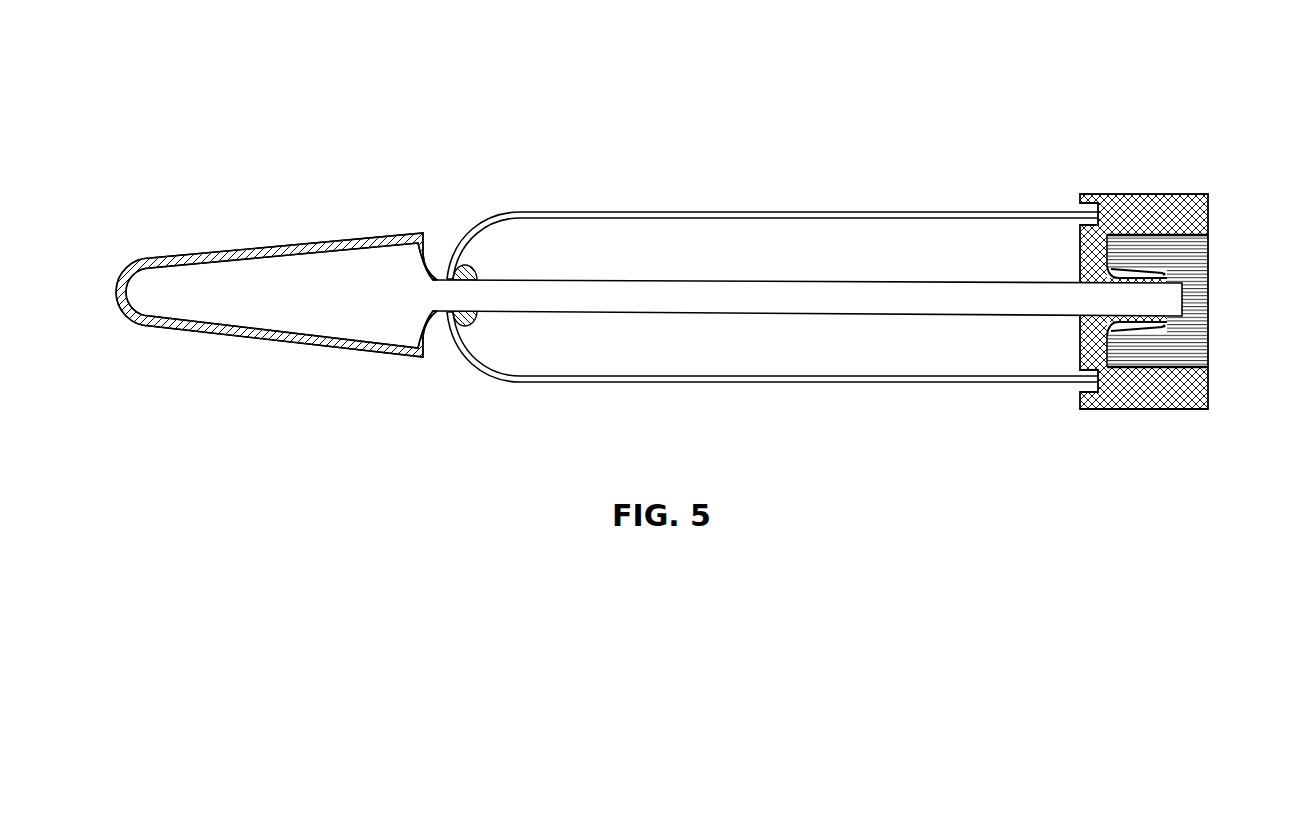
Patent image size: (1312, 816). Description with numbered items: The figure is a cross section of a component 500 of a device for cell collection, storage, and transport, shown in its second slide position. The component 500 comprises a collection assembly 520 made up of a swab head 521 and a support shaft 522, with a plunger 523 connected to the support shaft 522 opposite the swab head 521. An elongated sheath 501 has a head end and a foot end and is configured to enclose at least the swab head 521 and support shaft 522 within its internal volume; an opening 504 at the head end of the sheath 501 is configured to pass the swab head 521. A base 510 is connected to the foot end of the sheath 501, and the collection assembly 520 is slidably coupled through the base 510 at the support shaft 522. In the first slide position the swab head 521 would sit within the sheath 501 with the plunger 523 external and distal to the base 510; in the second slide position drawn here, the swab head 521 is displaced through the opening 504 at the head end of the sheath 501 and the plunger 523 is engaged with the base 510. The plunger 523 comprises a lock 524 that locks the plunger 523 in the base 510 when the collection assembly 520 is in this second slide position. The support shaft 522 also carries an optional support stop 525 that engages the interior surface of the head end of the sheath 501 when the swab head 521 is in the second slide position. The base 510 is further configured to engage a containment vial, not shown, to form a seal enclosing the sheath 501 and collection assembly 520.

The component 500 is at (681, 273).
The sheath 501 is at (518, 212).
The opening 504 is at (443, 313).
The base 510 is at (1157, 195).
The collection assembly 520 is at (716, 280).
The swab head 521 is at (340, 288).
The support shaft 522 is at (867, 308).
The plunger 523 is at (1208, 272).
The lock 524 is at (1165, 330).
The support stop 525 is at (477, 323).